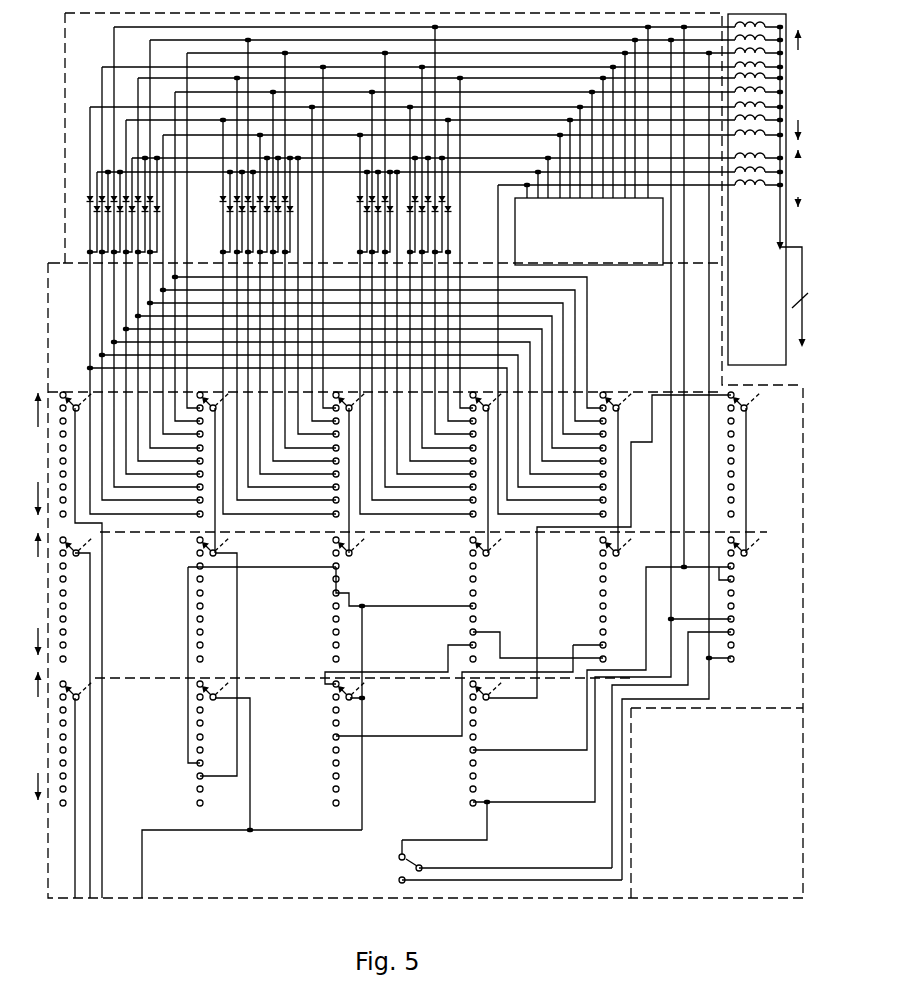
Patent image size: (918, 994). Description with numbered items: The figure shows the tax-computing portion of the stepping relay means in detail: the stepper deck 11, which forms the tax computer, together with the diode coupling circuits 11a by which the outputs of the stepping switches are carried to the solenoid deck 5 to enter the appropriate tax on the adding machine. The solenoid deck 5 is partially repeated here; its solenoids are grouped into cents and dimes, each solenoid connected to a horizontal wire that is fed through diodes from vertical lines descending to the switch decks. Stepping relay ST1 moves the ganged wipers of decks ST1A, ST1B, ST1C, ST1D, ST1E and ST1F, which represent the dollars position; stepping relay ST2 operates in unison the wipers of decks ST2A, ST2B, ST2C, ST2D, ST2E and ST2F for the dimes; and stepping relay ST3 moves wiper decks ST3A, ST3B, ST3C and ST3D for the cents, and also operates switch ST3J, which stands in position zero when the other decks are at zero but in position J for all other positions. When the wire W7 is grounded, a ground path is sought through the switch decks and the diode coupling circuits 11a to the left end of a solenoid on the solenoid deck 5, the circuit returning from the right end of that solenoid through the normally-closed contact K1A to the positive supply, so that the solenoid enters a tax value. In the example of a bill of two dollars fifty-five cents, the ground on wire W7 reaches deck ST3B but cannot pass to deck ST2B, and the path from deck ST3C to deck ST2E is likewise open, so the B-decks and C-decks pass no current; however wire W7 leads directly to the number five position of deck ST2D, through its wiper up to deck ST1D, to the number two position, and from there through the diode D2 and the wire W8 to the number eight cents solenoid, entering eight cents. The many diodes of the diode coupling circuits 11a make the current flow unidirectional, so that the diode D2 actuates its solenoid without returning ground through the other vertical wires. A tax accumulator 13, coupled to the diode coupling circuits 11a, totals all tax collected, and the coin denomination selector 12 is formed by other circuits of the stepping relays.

The diode coupling circuits 11a is at (108, 33).
The solenoid deck 5 is at (779, 283).
The tax accumulator 13 is at (652, 226).
The stepper deck 11 is at (160, 589).
The coin denomination selector 12 is at (767, 824).
The normally-closed contact K1A is at (800, 314).
The wire W8 is at (505, 124).
The wire W7 is at (220, 836).
The diode D2 is at (451, 213).
The switch deck ST1A is at (72, 447).
The switch deck ST1B is at (210, 447).
The switch deck ST1C is at (344, 447).
The switch deck ST1D is at (482, 447).
The switch deck ST1E is at (615, 447).
The switch deck ST1F is at (757, 454).
The switch deck ST2A is at (98, 599).
The switch deck ST2B is at (230, 599).
The switch deck ST2C is at (367, 599).
The switch deck ST2D is at (498, 599).
The switch deck ST2E is at (631, 599).
The switch deck ST2F is at (755, 599).
The wiper deck ST3A is at (98, 743).
The wiper deck ST3B is at (230, 743).
The wiper deck ST3C is at (367, 743).
The wiper deck ST3D is at (496, 743).
The switch ST3J is at (510, 861).